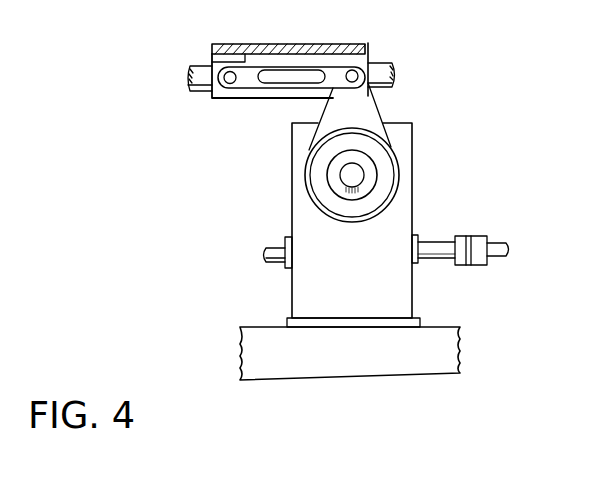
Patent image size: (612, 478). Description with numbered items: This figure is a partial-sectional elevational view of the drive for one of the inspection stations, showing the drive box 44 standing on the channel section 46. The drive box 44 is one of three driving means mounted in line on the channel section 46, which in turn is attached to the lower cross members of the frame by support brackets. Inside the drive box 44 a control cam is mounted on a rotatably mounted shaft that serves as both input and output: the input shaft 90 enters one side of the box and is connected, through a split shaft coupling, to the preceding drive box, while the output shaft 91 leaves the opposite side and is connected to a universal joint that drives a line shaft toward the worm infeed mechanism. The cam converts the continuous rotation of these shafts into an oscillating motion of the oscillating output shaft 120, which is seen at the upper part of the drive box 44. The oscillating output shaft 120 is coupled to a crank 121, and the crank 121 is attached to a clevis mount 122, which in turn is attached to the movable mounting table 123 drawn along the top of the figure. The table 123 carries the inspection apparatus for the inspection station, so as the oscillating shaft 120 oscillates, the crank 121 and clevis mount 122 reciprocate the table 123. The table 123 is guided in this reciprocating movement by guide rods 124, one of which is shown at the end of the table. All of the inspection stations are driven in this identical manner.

The drive box 44 is at (412, 213).
The channel section 46 is at (447, 326).
The input shaft 90 is at (266, 263).
The output shaft 91 is at (417, 263).
The oscillating output shaft 120 is at (364, 171).
The crank 121 is at (378, 108).
The clevis mount 122 is at (283, 98).
The movable mounting table 123 is at (369, 45).
The guide rods 124 is at (193, 66).